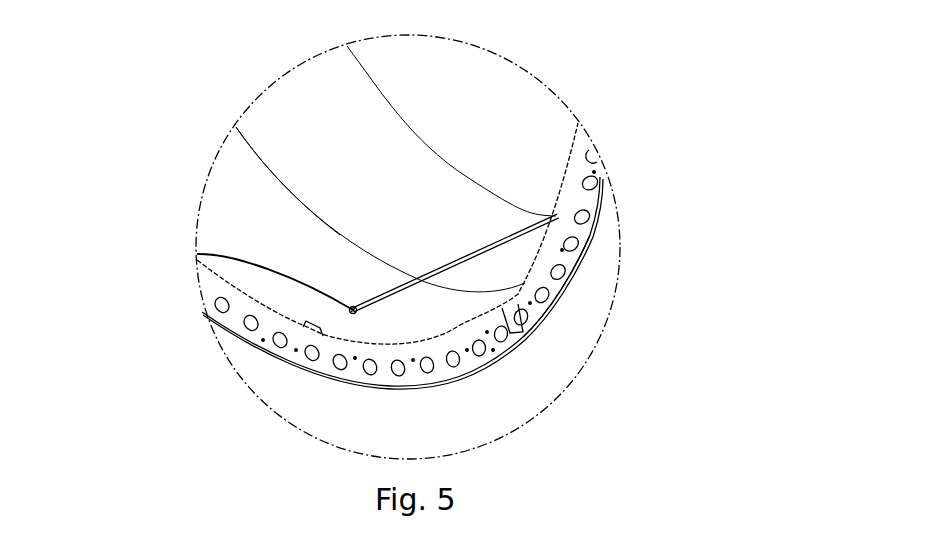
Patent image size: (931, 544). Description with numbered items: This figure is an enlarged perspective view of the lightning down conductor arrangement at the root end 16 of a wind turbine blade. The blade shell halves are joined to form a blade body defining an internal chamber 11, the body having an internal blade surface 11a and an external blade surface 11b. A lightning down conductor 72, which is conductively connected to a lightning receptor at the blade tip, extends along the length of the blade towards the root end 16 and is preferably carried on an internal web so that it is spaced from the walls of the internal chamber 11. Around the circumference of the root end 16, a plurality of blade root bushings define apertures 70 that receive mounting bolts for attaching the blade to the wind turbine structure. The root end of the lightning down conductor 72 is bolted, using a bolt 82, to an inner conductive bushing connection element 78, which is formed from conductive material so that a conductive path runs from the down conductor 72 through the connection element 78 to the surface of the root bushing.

The internal chamber 11 is at (379, 165).
The internal blade surface 11a is at (242, 192).
The external blade surface 11b is at (586, 296).
The root end 16 is at (161, 177).
The apertures 70 is at (594, 190).
The lightning down conductor 72 is at (472, 247).
The inner conductive bushing connection element 78 is at (351, 313).
The bolt 82 is at (197, 254).